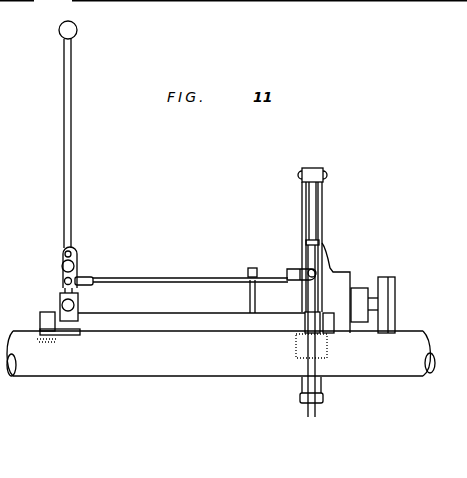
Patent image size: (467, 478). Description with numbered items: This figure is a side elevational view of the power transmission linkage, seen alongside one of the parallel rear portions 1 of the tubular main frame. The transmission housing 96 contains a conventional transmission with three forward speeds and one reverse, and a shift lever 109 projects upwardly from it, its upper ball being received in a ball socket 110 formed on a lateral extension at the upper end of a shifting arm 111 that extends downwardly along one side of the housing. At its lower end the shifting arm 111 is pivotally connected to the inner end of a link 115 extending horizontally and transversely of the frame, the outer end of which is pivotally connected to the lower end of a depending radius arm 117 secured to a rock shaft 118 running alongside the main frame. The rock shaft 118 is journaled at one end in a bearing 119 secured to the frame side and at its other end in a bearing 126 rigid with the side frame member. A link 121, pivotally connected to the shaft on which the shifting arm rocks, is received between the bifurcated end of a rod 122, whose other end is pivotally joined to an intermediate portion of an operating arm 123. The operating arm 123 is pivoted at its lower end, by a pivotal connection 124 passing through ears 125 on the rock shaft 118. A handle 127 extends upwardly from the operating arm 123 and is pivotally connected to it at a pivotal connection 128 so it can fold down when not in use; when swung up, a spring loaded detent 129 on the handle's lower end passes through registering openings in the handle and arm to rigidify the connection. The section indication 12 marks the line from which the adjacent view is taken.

The rear portions 1 is at (207, 363).
The section line 12 is at (71, 205).
The transmission housing 96 is at (338, 267).
The shift lever 109 is at (313, 213).
The ball socket 110 is at (312, 170).
The shifting arm 111 is at (302, 178).
The link 115 is at (312, 406).
The radius arm 117 is at (307, 367).
The rock shaft 118 is at (190, 320).
The bearing 119 is at (303, 331).
The link 121 is at (322, 293).
The rod 122 is at (181, 263).
The operating arm 123 is at (62, 293).
The pivotal connection 124 is at (78, 303).
The ears 125 is at (117, 313).
The bearing 126 is at (50, 312).
The handle 127 is at (72, 157).
The pivotal connection 128 is at (75, 251).
The spring loaded detent 129 is at (80, 262).